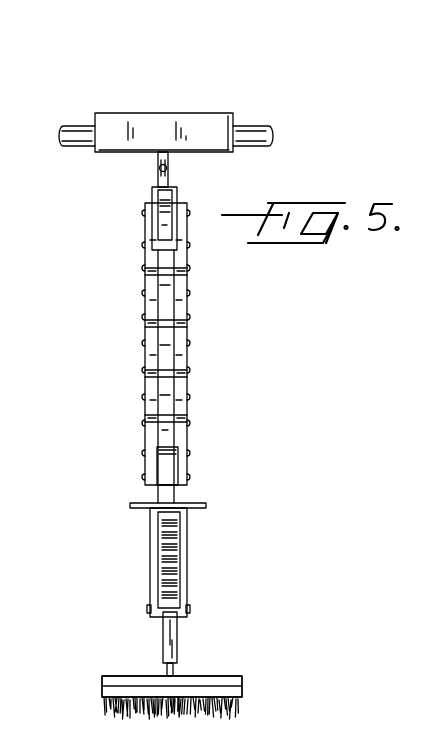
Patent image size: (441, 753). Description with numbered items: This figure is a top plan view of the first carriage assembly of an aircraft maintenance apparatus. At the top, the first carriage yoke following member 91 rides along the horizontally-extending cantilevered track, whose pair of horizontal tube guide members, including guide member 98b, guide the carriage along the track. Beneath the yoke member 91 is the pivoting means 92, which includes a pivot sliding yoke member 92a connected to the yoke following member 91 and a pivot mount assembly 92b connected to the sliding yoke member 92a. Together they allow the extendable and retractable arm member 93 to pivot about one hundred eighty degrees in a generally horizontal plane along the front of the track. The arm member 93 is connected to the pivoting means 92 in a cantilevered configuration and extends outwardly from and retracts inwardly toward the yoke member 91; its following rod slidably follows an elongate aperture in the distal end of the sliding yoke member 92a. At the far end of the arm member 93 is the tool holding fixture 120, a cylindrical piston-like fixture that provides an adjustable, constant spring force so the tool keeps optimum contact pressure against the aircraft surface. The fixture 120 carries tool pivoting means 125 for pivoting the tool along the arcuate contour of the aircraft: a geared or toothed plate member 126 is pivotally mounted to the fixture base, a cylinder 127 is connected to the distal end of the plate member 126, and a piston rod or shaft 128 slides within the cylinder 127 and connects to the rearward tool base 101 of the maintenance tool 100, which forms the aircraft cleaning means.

The first carriage yoke following member 91 is at (170, 113).
The first carriage guide member 98b is at (257, 126).
The pivoting means 92 is at (133, 195).
The pivot sliding yoke member 92a is at (158, 168).
The pivot mount assembly 92b is at (170, 168).
The extendable and retractable arm member 93 is at (190, 388).
The tool holding fixture 120 is at (203, 522).
The tool pivoting means 125 is at (135, 591).
The geared or toothed plate member 126 is at (177, 560).
The cylinder 127 is at (178, 650).
The piston rod or shaft 128 is at (165, 674).
The tool base 101 is at (225, 676).
The maintenance tool 100 is at (283, 690).